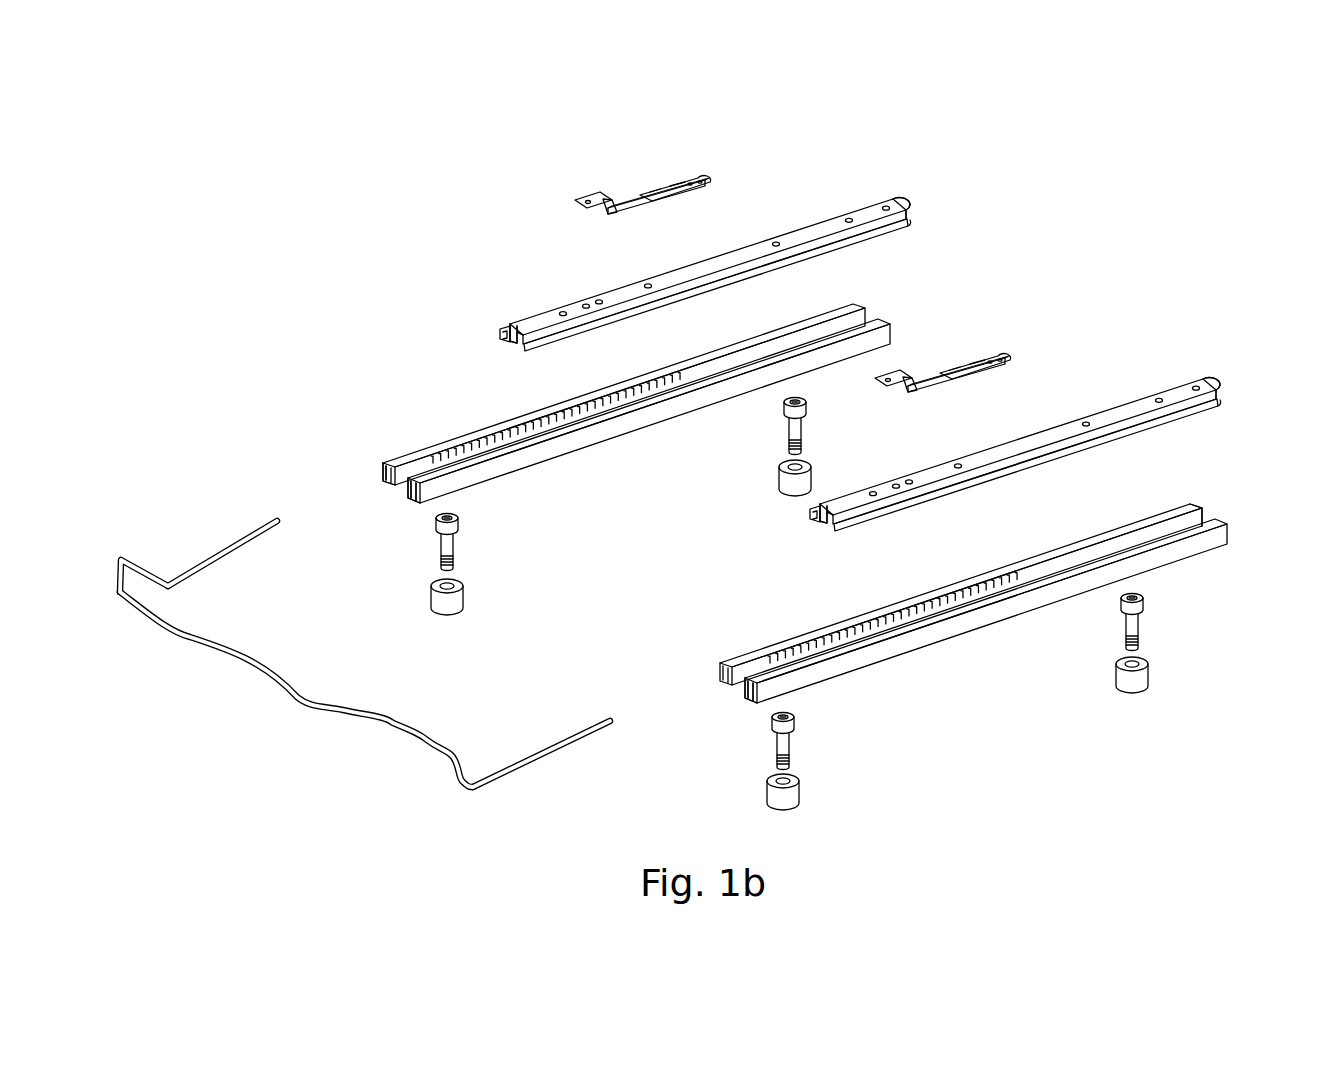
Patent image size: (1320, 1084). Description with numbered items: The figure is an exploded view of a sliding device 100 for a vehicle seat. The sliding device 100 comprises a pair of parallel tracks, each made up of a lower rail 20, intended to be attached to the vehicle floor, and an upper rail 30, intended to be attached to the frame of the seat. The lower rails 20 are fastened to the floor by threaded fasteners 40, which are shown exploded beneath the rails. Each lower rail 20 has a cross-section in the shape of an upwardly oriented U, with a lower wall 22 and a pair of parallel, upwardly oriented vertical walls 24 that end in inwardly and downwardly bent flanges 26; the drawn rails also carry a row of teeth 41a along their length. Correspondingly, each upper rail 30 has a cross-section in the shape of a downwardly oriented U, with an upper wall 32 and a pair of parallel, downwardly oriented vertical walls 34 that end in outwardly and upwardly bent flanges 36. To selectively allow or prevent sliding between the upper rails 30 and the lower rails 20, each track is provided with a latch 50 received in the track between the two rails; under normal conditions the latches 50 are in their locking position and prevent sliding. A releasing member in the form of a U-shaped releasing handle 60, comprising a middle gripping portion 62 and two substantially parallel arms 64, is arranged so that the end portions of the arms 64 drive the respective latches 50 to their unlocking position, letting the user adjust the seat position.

The sliding device 100 is at (1116, 246).
The lower rail 20 is at (590, 447).
The lower wall 22 is at (413, 504).
The vertical wall 24 is at (500, 466).
The flange 26 is at (383, 479).
The upper rail 30 is at (794, 238).
The upper wall 32 is at (888, 198).
The vertical wall 34 is at (548, 326).
The flange 36 is at (526, 352).
The threaded fastener 40 is at (430, 596).
The rack teeth 41a is at (498, 437).
The latch 50 is at (684, 170).
The releasing handle 60 is at (365, 648).
The middle gripping portion 62 is at (262, 684).
The arm 64 is at (173, 556).